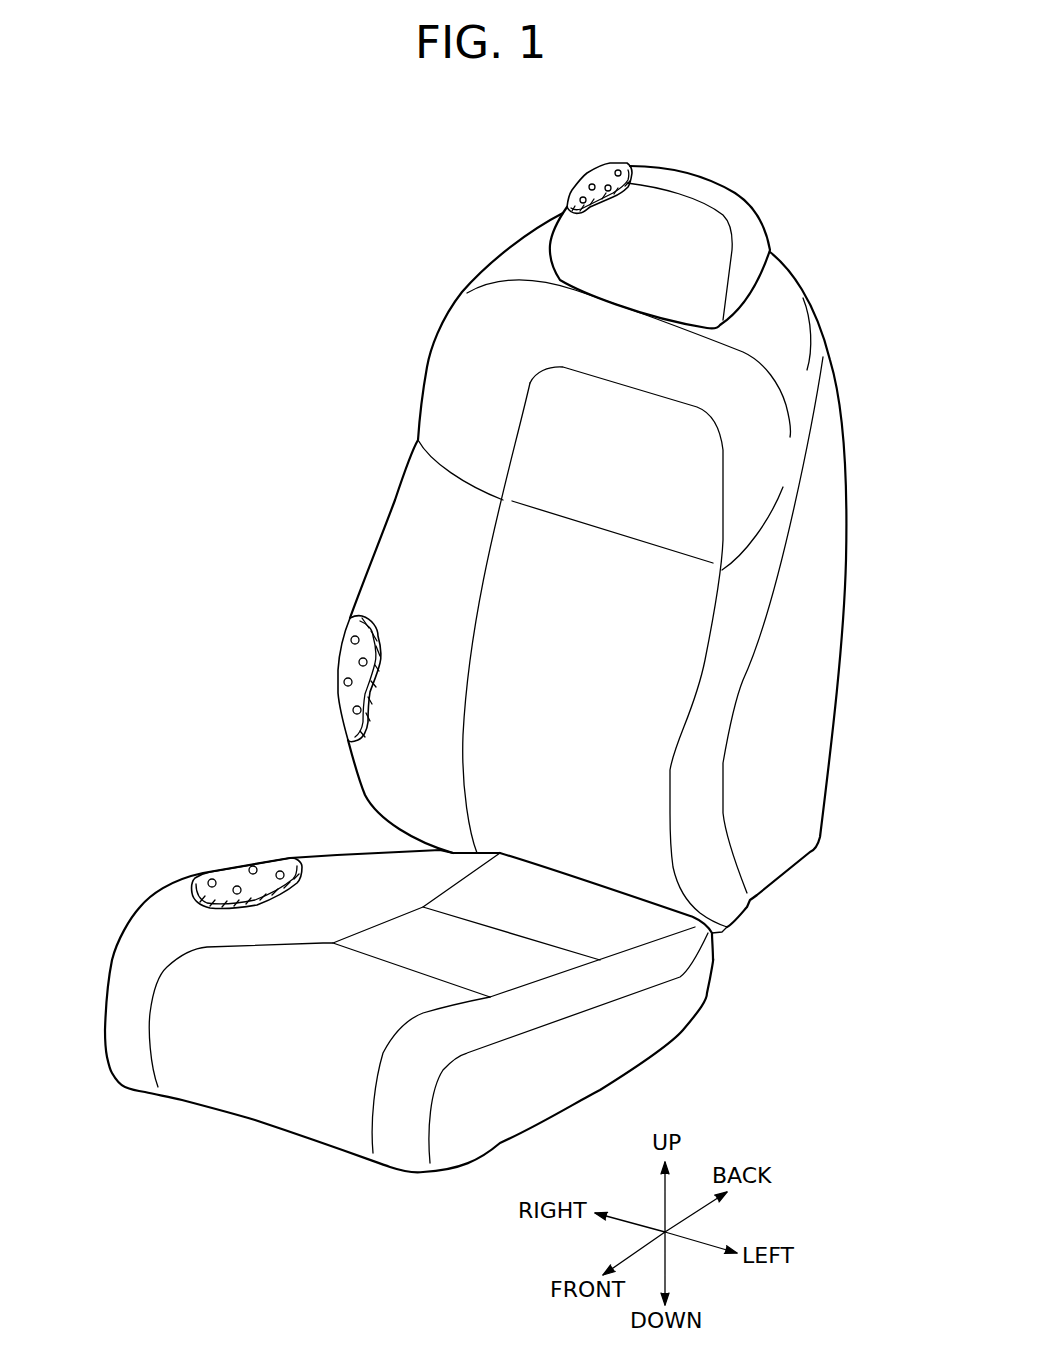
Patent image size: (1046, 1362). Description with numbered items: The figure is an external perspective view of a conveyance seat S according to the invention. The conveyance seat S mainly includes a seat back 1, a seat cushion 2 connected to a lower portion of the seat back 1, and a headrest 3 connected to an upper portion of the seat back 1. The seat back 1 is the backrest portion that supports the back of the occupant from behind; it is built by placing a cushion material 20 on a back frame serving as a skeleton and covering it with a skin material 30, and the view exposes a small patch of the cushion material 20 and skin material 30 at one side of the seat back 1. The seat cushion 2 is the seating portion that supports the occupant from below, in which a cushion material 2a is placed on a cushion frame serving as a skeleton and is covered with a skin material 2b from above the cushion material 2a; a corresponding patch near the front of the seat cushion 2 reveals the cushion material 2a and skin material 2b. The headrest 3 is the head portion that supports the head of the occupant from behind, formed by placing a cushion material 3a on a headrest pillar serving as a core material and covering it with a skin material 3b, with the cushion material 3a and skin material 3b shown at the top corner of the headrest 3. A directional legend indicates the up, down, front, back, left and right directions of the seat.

The conveyance seat S is at (248, 255).
The seat back 1 is at (287, 523).
The seat cushion 2 is at (123, 888).
The headrest 3 is at (702, 162).
The cushion material 2a is at (227, 880).
The skin material 2b is at (293, 857).
The cushion material 3a is at (582, 190).
The skin material 3b is at (632, 163).
The cushion material 20 is at (350, 621).
The skin material 30 is at (367, 677).